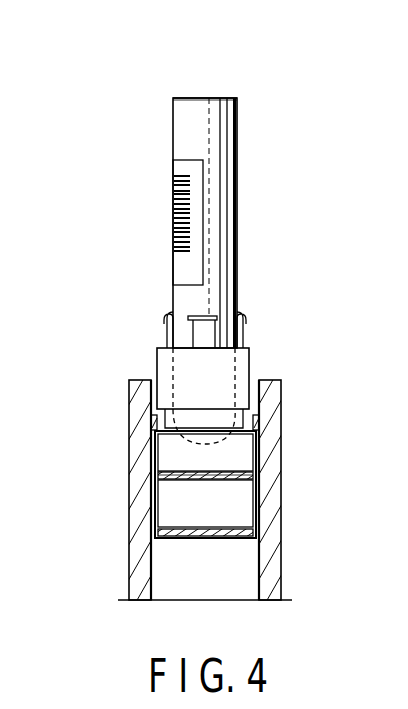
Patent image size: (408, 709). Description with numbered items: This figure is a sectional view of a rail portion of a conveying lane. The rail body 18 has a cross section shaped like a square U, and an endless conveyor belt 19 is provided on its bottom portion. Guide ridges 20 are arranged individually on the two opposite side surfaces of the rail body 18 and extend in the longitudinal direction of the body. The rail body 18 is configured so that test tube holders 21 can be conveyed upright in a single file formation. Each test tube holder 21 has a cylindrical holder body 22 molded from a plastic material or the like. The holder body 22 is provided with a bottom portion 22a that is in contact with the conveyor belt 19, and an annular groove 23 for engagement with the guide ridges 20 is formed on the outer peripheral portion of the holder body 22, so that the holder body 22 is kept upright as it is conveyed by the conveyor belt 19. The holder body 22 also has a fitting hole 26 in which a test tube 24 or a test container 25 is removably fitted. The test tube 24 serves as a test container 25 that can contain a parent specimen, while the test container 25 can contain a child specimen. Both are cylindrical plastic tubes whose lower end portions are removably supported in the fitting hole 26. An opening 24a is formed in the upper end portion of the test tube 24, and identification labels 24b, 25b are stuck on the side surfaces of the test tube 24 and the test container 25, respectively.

The rail body 18 is at (275, 460).
The endless conveyor belt 19 is at (253, 476).
The guide ridges 20 is at (253, 421).
The test tube holder 21 is at (253, 344).
The holder body 22 is at (243, 360).
The bottom portion 22a is at (227, 477).
The annular groove 23 is at (202, 436).
The test tube 24 is at (246, 223).
The test container 25 is at (239, 150).
The opening 24a is at (215, 64).
The identification label 24b is at (125, 222).
The identification label 25b is at (173, 208).
The fitting hole 26 is at (178, 373).